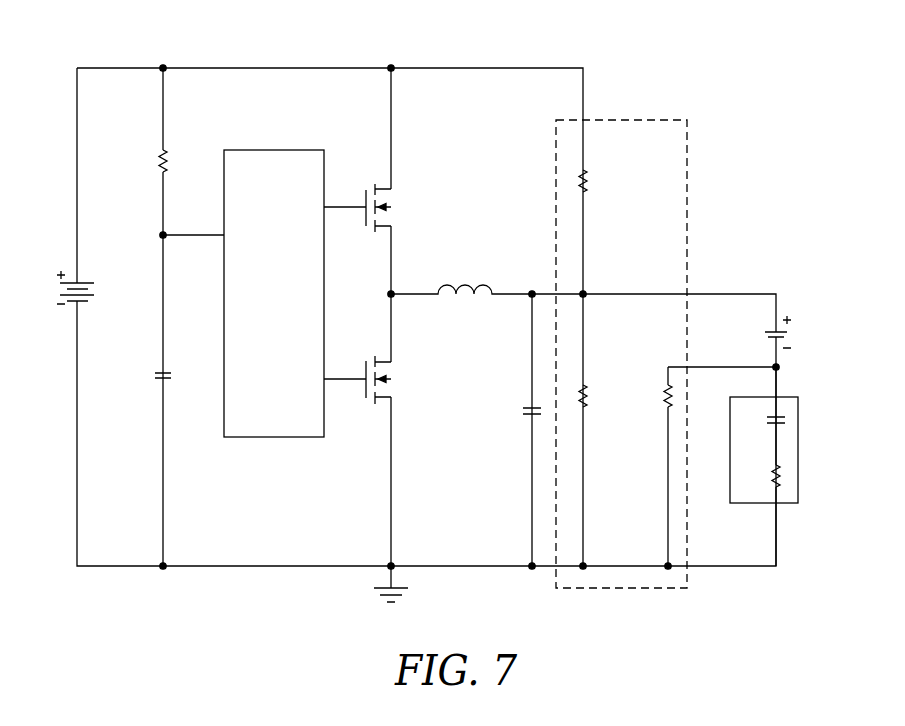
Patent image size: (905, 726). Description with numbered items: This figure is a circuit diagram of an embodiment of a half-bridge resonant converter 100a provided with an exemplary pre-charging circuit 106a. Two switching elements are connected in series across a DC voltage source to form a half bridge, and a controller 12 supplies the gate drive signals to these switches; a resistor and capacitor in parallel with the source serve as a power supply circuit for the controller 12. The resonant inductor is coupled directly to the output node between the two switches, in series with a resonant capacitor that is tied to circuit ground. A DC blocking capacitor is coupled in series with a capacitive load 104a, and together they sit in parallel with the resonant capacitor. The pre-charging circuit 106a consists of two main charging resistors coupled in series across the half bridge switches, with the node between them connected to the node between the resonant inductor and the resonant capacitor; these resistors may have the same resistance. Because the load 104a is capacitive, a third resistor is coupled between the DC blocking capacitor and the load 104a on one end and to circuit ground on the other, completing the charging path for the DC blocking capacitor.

The half-bridge resonant converter 100a is at (447, 339).
The controller 12 is at (259, 420).
The capacitive load 104a is at (787, 503).
The pre-charging circuit 106a is at (652, 588).